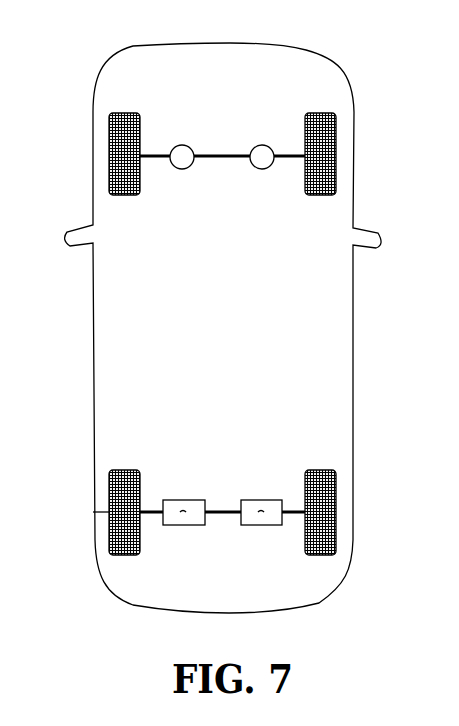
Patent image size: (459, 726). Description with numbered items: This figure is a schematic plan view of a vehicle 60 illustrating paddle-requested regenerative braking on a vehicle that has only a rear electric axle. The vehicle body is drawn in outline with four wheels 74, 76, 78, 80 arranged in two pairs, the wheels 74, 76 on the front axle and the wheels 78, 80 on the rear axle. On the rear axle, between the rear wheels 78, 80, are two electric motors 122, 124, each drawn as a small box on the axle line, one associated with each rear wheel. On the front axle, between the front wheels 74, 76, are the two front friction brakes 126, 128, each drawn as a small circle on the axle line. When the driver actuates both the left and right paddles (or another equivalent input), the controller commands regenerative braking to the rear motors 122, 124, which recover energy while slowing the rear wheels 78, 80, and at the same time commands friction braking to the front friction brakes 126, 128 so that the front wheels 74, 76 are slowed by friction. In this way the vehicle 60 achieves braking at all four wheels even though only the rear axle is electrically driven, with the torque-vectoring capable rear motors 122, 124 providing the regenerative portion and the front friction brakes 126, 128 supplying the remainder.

The vehicle 60 is at (209, 80).
The wheel 74 is at (109, 155).
The wheel 76 is at (336, 155).
The wheel 78 is at (109, 512).
The wheel 80 is at (336, 512).
The motor 122 is at (182, 500).
The motor 124 is at (262, 500).
The front friction brake 126 is at (181, 145).
The front friction brake 128 is at (263, 145).